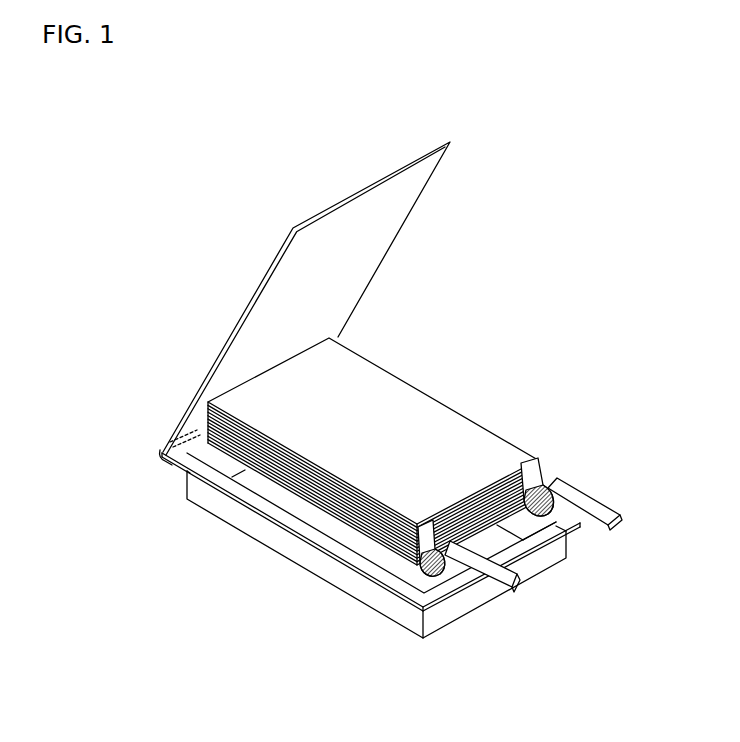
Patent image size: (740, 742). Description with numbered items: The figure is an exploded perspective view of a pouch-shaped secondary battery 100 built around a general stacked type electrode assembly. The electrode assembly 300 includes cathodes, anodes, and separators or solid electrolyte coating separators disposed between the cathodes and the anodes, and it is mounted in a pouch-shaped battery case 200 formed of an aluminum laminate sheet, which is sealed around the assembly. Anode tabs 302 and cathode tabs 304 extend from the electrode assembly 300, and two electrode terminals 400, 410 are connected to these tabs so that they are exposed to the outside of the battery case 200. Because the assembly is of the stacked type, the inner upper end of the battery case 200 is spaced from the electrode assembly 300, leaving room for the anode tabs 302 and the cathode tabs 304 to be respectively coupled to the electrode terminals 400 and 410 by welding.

The pouch-shaped secondary battery 100 is at (185, 270).
The pouch-shaped battery case 200 is at (177, 467).
The electrode assembly 300 is at (473, 392).
The anode tabs 302 is at (423, 553).
The cathode tabs 304 is at (538, 467).
The electrode terminal 400 is at (500, 577).
The electrode terminal 410 is at (601, 518).